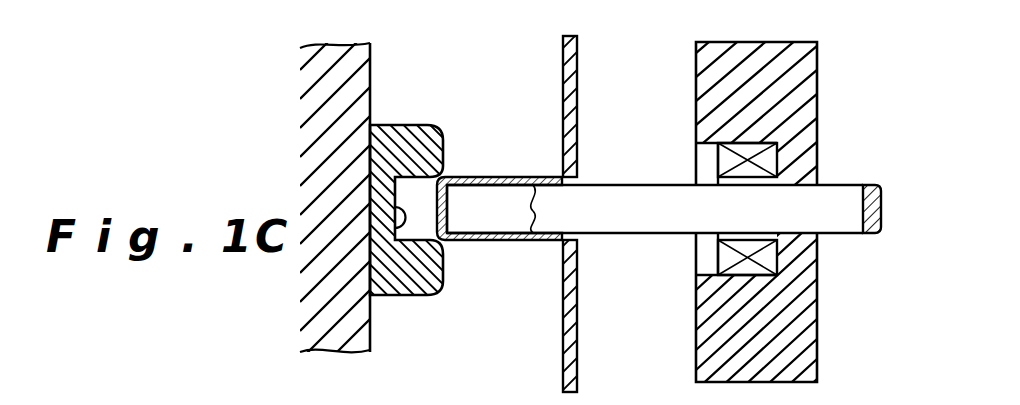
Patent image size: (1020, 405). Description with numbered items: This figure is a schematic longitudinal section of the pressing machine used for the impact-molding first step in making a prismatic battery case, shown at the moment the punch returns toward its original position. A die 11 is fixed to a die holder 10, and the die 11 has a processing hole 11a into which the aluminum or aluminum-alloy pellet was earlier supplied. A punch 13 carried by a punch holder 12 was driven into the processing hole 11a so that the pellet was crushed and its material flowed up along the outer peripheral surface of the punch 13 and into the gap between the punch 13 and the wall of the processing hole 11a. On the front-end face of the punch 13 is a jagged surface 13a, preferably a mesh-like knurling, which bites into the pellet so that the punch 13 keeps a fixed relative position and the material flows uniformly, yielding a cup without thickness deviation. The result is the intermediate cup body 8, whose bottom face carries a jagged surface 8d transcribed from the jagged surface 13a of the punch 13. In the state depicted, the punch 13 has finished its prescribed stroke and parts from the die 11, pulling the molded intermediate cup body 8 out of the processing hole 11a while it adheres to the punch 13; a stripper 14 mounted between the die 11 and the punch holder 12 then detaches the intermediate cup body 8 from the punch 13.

The intermediate cup body 8 is at (502, 176).
The jagged surface 8d is at (457, 243).
The die holder 10 is at (340, 80).
The die 11 is at (420, 143).
The processing hole 11a is at (396, 237).
The punch holder 12 is at (712, 78).
The punch 13 is at (647, 234).
The jagged surface 13a is at (520, 240).
The stripper 14 is at (568, 60).